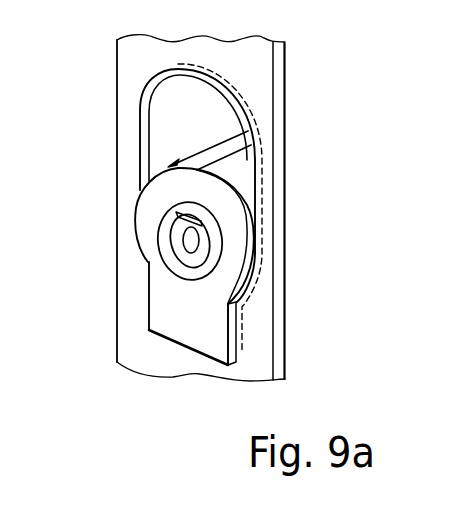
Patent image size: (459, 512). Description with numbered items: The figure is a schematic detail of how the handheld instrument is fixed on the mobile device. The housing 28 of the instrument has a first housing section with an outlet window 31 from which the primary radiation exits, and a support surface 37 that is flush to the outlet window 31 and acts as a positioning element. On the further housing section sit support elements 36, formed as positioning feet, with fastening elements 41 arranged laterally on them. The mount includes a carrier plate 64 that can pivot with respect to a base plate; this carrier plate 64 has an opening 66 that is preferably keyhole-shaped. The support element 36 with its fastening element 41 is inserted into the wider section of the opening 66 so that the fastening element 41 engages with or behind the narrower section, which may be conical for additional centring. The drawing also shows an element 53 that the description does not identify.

The housing 28 is at (200, 150).
The outlet window 31 is at (183, 250).
The support element 36 is at (176, 325).
The support surface 37 is at (168, 289).
The fastening element 41 is at (228, 330).
The hidden slot line 53 is at (242, 308).
The carrier plate 64 is at (255, 337).
The opening 66 is at (260, 157).